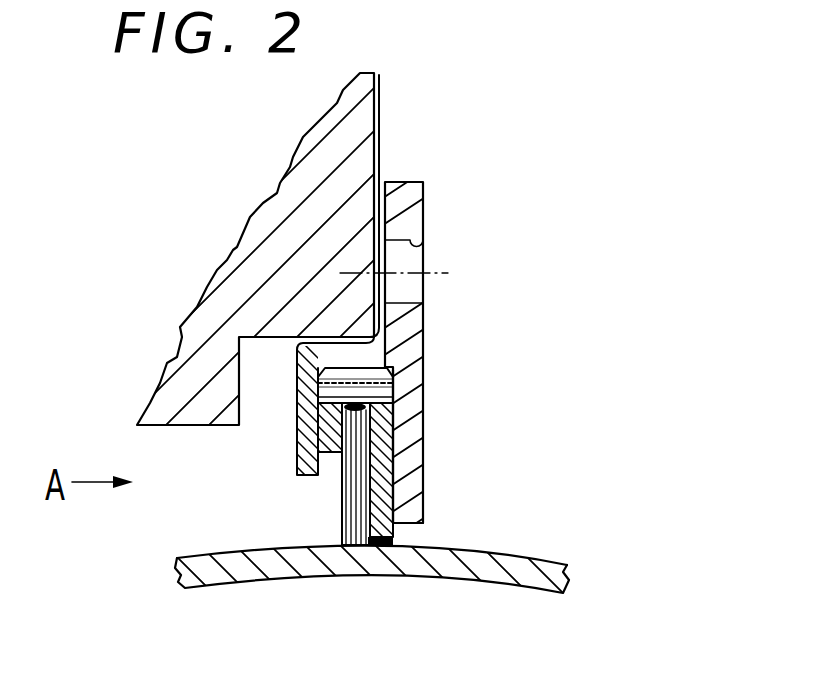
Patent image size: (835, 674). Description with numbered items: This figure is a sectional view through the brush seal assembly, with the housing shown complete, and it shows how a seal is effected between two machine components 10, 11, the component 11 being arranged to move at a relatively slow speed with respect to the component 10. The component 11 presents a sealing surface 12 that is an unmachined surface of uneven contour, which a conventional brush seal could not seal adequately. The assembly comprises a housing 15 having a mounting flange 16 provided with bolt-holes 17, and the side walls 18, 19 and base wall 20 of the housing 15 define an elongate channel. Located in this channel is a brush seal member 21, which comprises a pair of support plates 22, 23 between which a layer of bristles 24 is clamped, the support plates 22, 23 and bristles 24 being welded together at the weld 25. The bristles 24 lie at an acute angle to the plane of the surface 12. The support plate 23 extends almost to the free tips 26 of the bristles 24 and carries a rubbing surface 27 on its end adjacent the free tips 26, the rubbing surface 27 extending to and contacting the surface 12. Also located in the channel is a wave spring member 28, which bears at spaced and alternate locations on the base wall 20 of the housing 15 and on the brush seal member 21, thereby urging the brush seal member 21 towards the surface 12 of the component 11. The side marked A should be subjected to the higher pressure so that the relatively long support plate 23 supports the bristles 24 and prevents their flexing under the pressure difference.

The machine component 10 is at (300, 152).
The machine component 11 is at (381, 558).
The sealing surface 12 is at (197, 557).
The housing 15 is at (462, 345).
The mounting flange 16 is at (413, 207).
The bolt-holes 17 is at (410, 243).
The side wall 18 is at (293, 427).
The side wall 19 is at (413, 436).
The base wall 20 is at (357, 364).
The brush seal member 21 is at (430, 391).
The support plate 22 is at (297, 457).
The support plate 23 is at (383, 470).
The bristles 24 is at (347, 513).
The weld 25 is at (303, 380).
The free tips 26 is at (358, 548).
The rubbing surface 27 is at (420, 545).
The wave spring member 28 is at (432, 350).